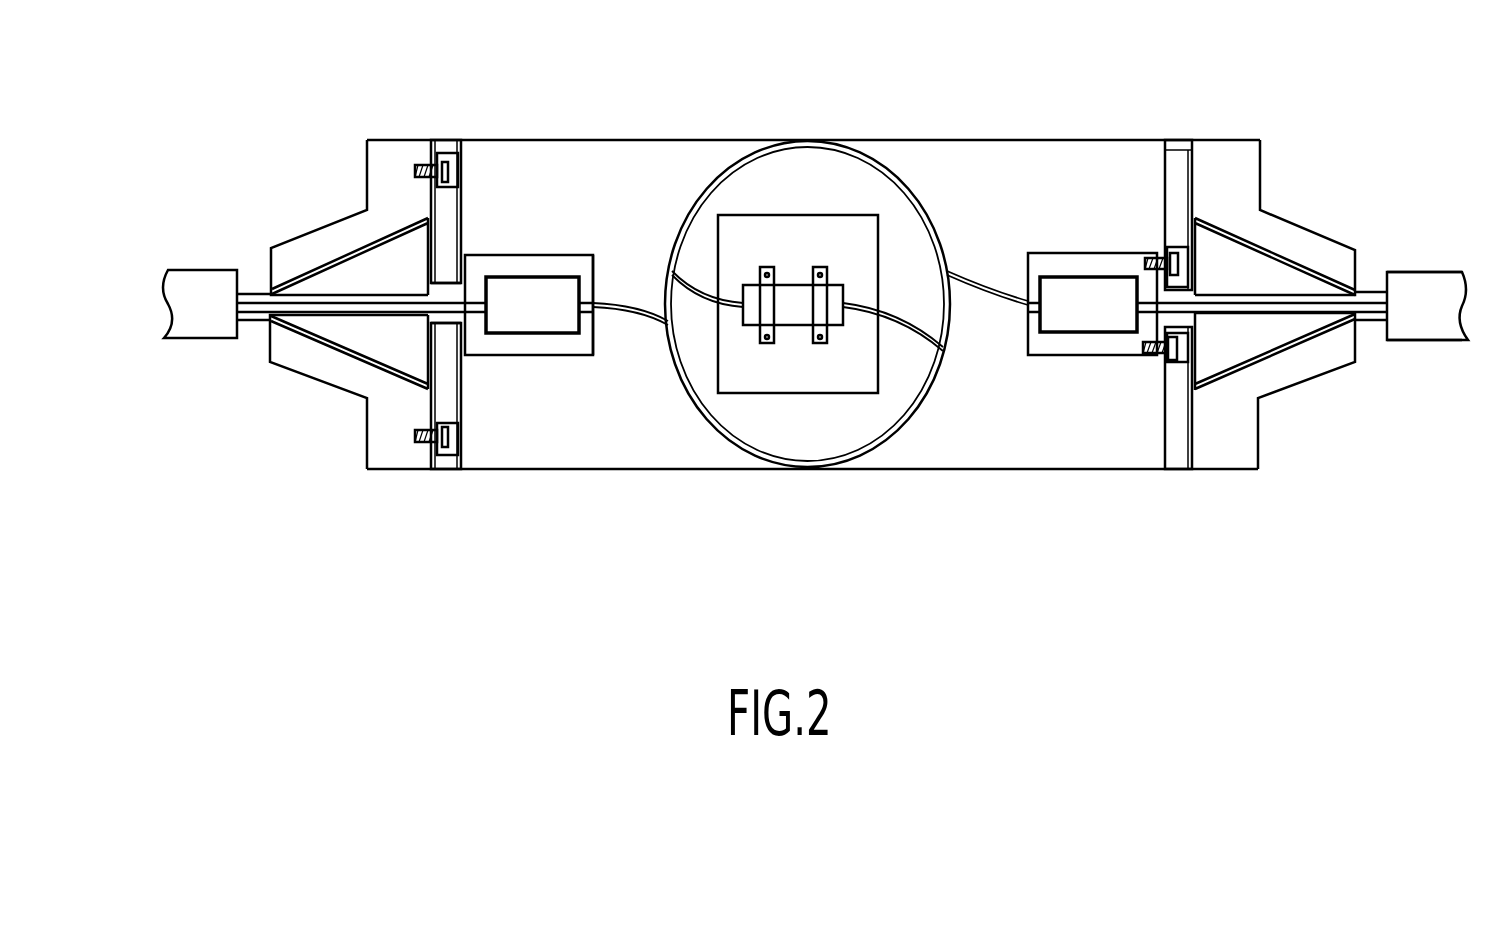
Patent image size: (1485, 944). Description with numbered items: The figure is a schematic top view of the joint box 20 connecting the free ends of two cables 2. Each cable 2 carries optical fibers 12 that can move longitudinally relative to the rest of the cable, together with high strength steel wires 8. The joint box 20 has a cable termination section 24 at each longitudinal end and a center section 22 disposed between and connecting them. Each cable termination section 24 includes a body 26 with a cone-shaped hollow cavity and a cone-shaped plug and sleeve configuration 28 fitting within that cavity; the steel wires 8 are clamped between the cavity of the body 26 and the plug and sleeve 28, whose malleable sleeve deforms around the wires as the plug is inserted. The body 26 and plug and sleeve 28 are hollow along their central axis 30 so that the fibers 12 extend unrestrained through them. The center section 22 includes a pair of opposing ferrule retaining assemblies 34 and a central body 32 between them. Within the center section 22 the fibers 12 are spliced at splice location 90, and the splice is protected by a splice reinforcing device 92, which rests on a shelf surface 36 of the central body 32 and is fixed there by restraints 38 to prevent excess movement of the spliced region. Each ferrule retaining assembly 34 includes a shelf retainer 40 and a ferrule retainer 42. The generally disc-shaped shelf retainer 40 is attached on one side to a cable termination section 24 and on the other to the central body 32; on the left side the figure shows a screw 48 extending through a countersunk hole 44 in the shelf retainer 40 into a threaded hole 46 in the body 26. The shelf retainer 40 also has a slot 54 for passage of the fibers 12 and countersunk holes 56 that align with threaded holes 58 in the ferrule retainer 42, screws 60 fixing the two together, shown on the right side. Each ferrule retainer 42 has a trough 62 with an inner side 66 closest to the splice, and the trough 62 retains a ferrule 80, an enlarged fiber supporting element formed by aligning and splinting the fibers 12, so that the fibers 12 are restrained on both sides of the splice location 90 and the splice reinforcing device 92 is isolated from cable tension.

The cable 2 is at (190, 327).
The high strength steel wire 8 is at (257, 327).
The optical fiber 12 is at (254, 305).
The joint box 20 is at (648, 517).
The center section 22 is at (893, 135).
The cable termination section 24 is at (395, 153).
The body 26 is at (370, 457).
The plug and sleeve configuration 28 is at (357, 267).
The central axis 30 is at (347, 308).
The central body 32 is at (987, 470).
The ferrule retaining assembly 34 is at (462, 202).
The shelf surface 36 is at (725, 235).
The restraint 38 is at (775, 290).
The shelf retainer 40 is at (453, 382).
The ferrule retainer 42 is at (537, 350).
The countersunk hole 44 is at (458, 457).
The threaded hole 46 is at (417, 467).
The screw 48 is at (457, 428).
The slot 54 is at (446, 293).
The countersunk hole 56 is at (1183, 362).
The threaded hole 58 is at (1143, 348).
The screw 60 is at (1172, 360).
The trough 62 is at (530, 277).
The inner side 66 is at (593, 350).
The ferrule 80 is at (562, 293).
The splice location 90 is at (788, 293).
The splice reinforcing device 92 is at (788, 327).